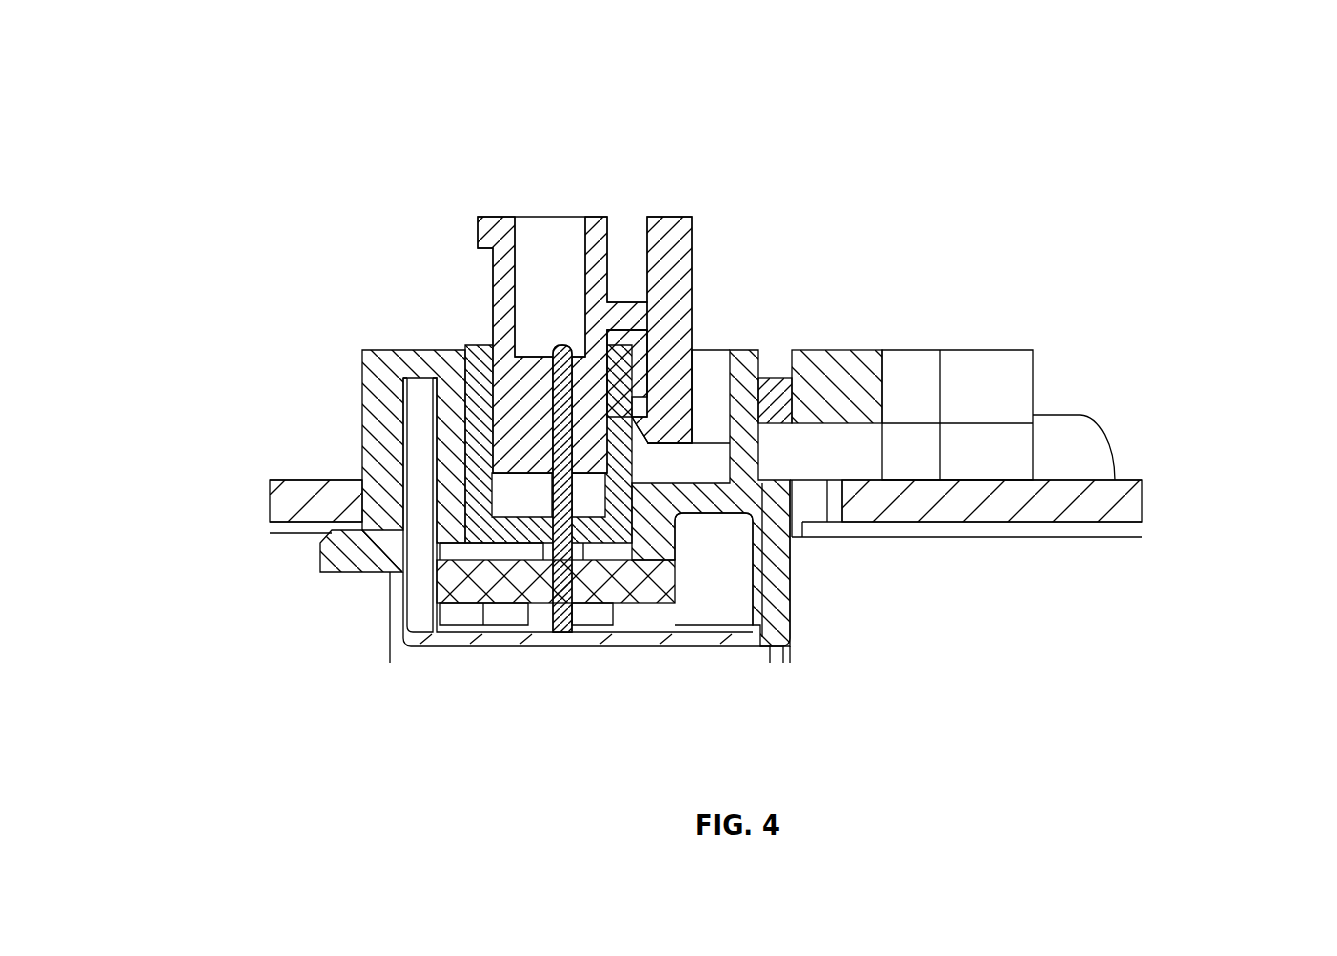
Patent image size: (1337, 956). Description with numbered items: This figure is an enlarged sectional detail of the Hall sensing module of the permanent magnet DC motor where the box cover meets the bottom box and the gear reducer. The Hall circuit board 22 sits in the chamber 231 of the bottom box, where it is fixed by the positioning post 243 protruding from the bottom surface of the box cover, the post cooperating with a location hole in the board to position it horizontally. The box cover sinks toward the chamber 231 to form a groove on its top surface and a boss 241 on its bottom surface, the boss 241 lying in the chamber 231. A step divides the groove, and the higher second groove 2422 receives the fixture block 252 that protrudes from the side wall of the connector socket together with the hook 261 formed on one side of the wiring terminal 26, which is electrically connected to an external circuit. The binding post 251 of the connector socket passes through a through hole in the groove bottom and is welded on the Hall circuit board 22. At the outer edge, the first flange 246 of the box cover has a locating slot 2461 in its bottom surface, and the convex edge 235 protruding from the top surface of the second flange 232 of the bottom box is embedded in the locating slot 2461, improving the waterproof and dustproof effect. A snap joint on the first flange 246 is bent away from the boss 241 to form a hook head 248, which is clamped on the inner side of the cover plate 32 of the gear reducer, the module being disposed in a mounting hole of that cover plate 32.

The Hall circuit board 22 is at (477, 580).
The wiring terminal 26 is at (683, 262).
The cover plate 32 is at (993, 502).
The chamber 231 is at (690, 595).
The second flange 232 is at (995, 452).
The convex edge 235 is at (772, 392).
The boss 241 is at (470, 500).
The positioning post 243 is at (505, 612).
The first flange 246 is at (975, 390).
The hook head 248 is at (333, 570).
The binding post 251 is at (565, 430).
The fixture block 252 is at (647, 387).
The hook 261 is at (645, 410).
The second groove 2422 is at (747, 500).
The locating slot 2461 is at (800, 400).